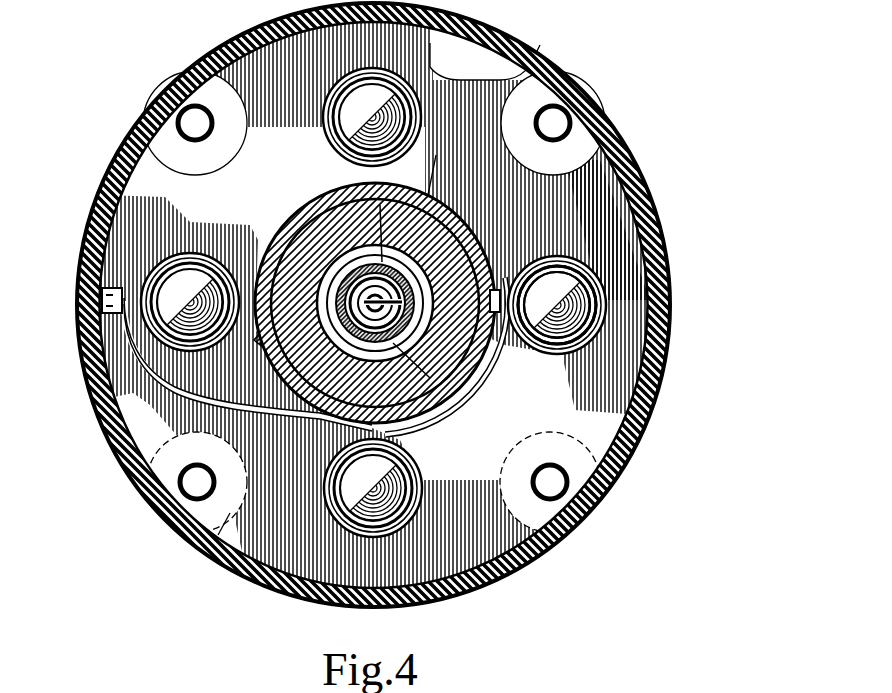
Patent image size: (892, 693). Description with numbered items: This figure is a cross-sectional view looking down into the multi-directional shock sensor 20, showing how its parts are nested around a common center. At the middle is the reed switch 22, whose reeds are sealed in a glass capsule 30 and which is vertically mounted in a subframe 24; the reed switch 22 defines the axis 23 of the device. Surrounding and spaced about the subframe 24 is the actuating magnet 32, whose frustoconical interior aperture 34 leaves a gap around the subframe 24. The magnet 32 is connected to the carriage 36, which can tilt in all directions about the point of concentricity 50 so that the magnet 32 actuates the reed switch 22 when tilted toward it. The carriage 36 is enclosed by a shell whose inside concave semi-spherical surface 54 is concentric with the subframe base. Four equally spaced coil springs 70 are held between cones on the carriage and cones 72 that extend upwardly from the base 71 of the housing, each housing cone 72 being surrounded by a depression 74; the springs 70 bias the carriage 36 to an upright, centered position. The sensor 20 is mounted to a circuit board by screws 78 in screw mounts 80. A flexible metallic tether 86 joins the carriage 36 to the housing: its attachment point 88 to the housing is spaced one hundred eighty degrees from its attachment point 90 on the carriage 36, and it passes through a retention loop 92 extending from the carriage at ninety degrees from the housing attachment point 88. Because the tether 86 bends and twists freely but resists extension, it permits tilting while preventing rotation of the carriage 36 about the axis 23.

The shock sensor 20 is at (655, 91).
The reed switch 22 is at (405, 225).
The axis 23 is at (445, 398).
The subframe 24 is at (430, 180).
The glass capsule 30 is at (300, 255).
The actuating magnet 32 is at (420, 247).
The frustoconical interior aperture 34 is at (266, 290).
The carriage 36 is at (320, 205).
The point of concentricity 50 is at (487, 372).
The inside concave semi-spherical surface 54 is at (235, 550).
The coil springs 70 is at (588, 266).
The base 71 is at (635, 283).
The cones 72 is at (560, 307).
The depressions 74 is at (603, 327).
The screws 78 is at (551, 500).
The screw mounts 80 is at (597, 465).
The tether 86 is at (147, 383).
The attachment point 88 is at (105, 287).
The attachment point 90 is at (498, 298).
The retention loop 92 is at (385, 437).